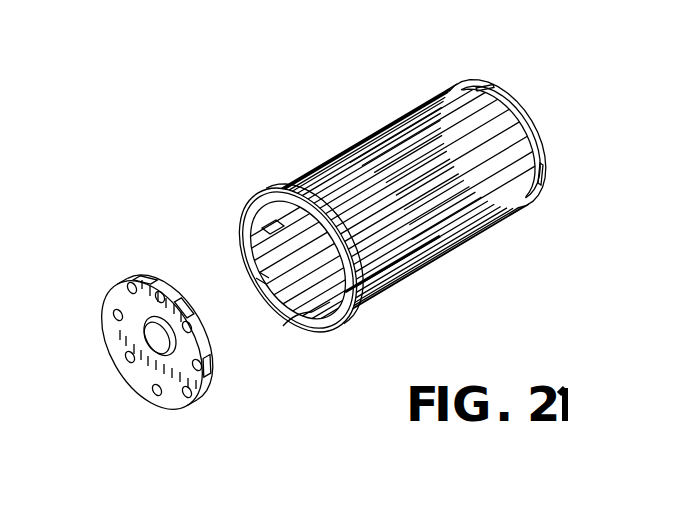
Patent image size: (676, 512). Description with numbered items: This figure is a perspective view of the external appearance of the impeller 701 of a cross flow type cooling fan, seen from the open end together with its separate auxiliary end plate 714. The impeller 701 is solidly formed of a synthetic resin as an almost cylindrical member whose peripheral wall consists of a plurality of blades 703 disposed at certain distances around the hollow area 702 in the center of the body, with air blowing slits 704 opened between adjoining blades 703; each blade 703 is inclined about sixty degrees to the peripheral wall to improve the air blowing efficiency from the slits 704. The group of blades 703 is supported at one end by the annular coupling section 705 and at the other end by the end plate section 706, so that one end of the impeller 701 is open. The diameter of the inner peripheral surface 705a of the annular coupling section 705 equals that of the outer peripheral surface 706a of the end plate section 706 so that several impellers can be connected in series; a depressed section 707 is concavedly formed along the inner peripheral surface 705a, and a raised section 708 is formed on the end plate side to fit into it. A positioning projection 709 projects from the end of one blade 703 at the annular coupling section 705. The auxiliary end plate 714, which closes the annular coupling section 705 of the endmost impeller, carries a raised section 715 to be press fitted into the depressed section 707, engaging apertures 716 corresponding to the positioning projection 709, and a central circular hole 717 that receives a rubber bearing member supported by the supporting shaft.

The impeller 701 is at (482, 250).
The hollow area 702 is at (248, 263).
The blade 703 is at (357, 175).
The air blowing slit 704 is at (437, 172).
The annular coupling section 705 is at (272, 196).
The inner peripheral surface 705a is at (261, 283).
The end plate section 706 is at (522, 120).
The outer peripheral surface 706a is at (505, 103).
The depressed section 707 is at (262, 228).
The raised section 708 is at (489, 93).
The positioning projection 709 is at (283, 326).
The auxiliary end plate 714 is at (135, 377).
The raised section 715 is at (152, 266).
The engaging aperture 716 is at (187, 395).
The circular hole 717 is at (158, 335).